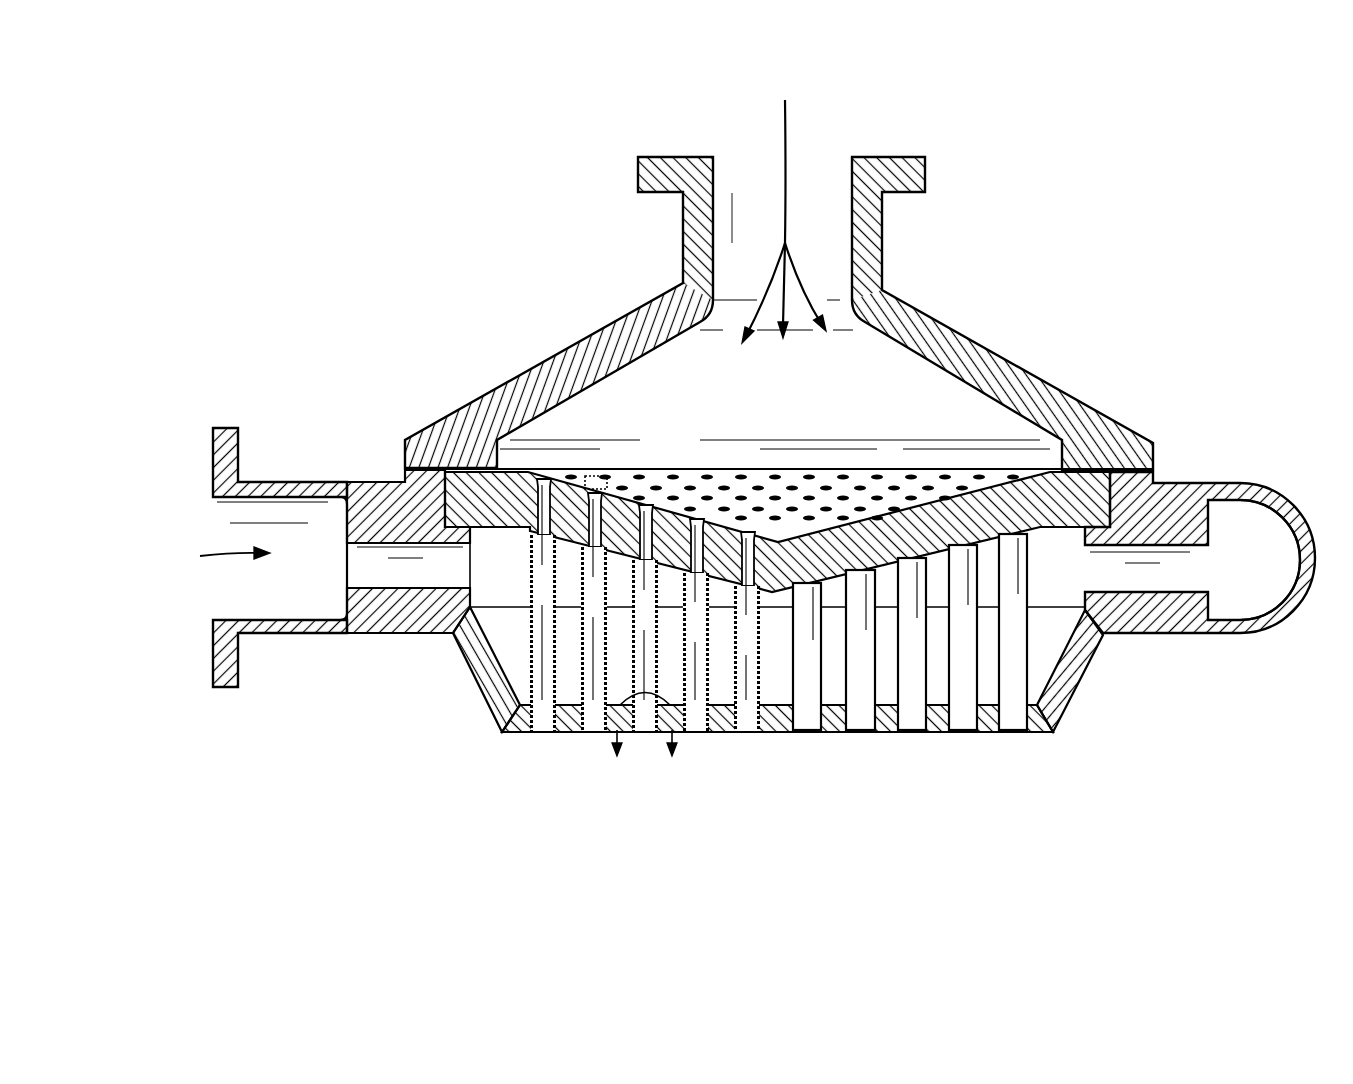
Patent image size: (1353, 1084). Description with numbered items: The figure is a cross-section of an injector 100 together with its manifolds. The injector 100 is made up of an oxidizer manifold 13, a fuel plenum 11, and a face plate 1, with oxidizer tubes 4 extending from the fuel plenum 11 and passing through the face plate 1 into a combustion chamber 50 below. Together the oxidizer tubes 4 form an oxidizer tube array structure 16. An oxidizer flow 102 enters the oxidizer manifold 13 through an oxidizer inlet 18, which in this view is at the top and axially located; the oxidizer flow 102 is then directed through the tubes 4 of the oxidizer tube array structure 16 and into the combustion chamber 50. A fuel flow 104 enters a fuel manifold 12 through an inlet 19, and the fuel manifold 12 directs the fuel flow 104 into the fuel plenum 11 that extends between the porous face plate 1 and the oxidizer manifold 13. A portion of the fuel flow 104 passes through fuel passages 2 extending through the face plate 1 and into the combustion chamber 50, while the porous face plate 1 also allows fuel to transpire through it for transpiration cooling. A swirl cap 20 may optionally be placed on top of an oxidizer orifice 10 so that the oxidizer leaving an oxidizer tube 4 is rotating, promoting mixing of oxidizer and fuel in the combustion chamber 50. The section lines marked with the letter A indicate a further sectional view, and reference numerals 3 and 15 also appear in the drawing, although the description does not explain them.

The face plate 1 is at (957, 733).
The fuel passages 2 is at (517, 732).
The tube 3 is at (543, 732).
The oxidizer tubes 4 is at (528, 652).
The oxidizer orifice 10 is at (700, 517).
The fuel plenum 11 is at (513, 577).
The fuel manifold 12 is at (1248, 575).
The oxidizer manifold 13 is at (825, 400).
The flange 15 is at (387, 482).
The oxidizer tube array structure 16 is at (950, 490).
The oxidizer inlet 18 is at (717, 219).
The inlet 19 is at (297, 503).
The swirl cap 20 is at (598, 476).
The combustion chamber 50 is at (833, 808).
The injector 100 is at (1052, 318).
The oxidizer flow 102 is at (783, 130).
The fuel flow 104 is at (206, 554).